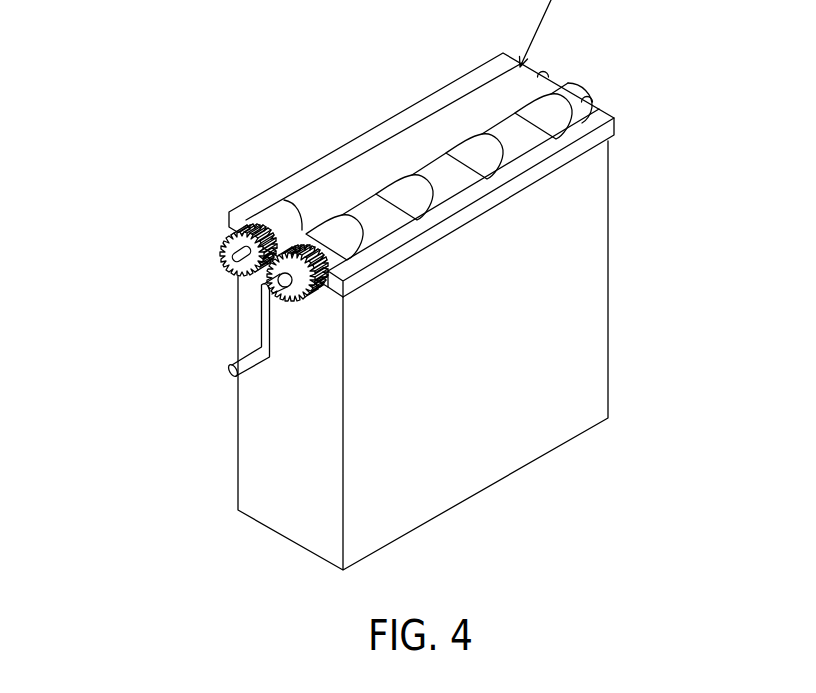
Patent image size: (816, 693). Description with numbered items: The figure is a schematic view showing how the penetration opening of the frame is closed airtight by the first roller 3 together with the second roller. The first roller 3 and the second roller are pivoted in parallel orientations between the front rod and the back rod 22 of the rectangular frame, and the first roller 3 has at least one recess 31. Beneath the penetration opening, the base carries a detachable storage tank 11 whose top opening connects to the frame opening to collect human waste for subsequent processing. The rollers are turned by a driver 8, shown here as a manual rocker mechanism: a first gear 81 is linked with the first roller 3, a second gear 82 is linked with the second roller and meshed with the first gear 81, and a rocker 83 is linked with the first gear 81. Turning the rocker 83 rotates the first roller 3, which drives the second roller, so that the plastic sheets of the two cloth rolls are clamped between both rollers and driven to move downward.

The first roller 3 is at (566, 90).
The recess 31 is at (522, 140).
The storage tank 11 is at (556, 310).
The back rod 22 is at (280, 226).
The driver 8 is at (403, 301).
The second gear 82 is at (232, 235).
The first gear 81 is at (306, 298).
The rocker 83 is at (261, 315).